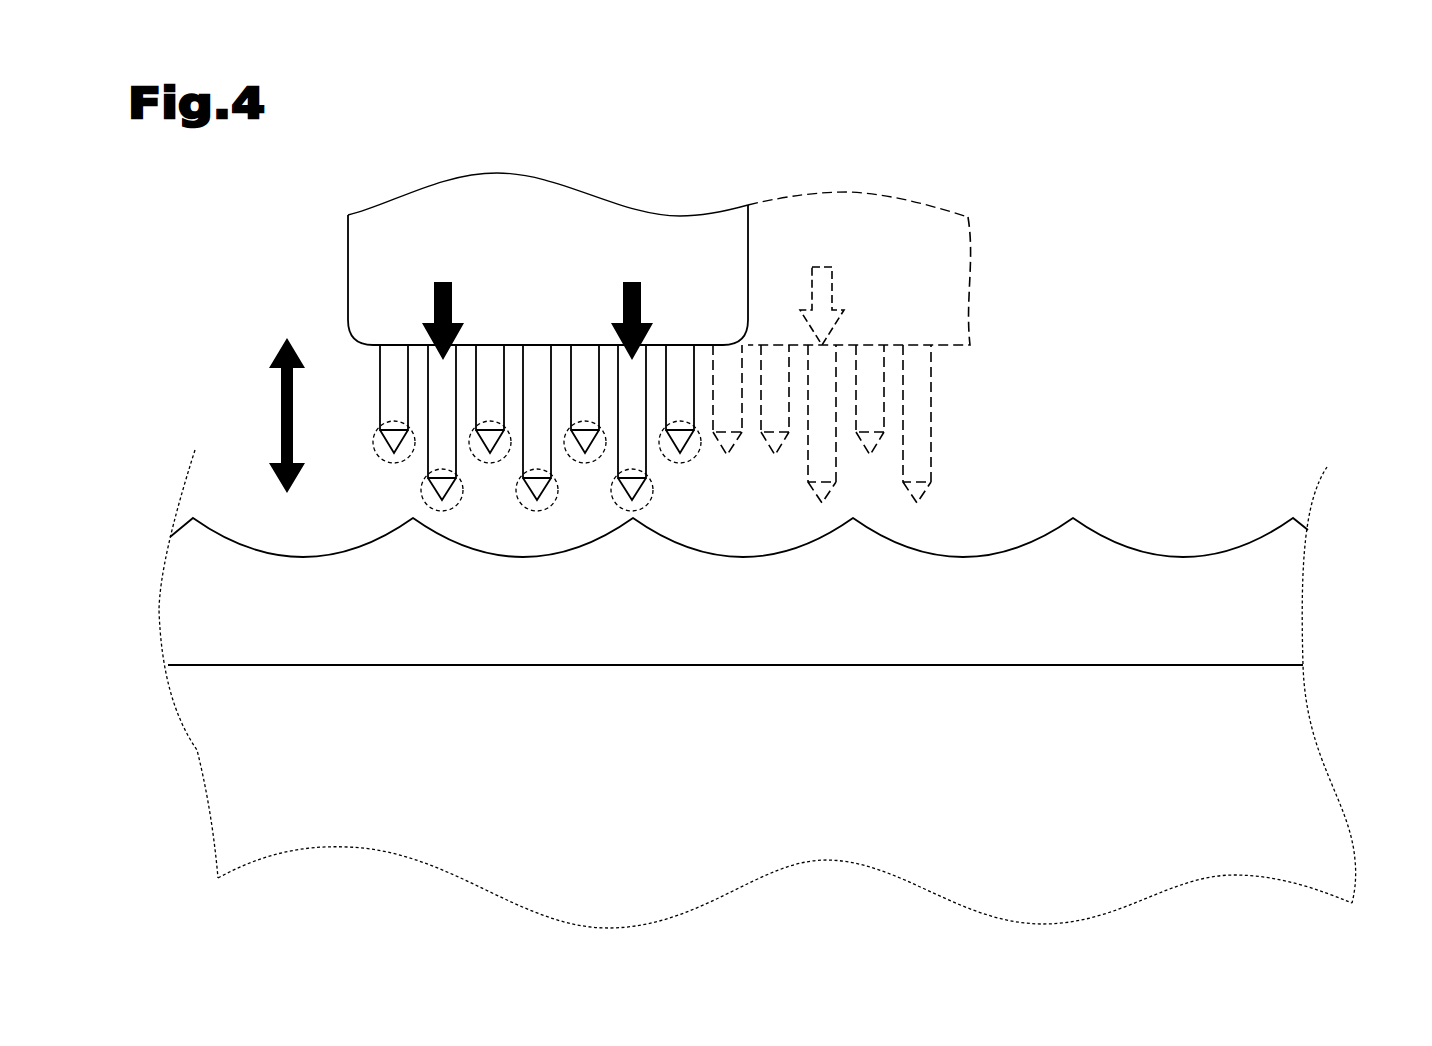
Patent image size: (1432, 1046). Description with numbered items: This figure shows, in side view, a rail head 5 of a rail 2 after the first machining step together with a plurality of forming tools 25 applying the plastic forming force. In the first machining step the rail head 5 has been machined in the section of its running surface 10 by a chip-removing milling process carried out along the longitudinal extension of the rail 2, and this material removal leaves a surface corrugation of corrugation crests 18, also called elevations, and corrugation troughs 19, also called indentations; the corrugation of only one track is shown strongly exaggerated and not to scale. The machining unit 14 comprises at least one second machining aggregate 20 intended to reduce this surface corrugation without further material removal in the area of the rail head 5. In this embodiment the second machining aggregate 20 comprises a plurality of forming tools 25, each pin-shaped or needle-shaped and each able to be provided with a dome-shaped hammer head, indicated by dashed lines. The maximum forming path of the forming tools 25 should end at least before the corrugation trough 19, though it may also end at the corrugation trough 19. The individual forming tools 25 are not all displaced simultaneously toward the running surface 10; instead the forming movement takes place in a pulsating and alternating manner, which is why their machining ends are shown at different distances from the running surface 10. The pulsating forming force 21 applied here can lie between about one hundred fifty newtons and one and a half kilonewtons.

The rail 2 is at (1302, 393).
The rail head 5 is at (1345, 580).
The running surface 10 is at (1167, 556).
The machining unit 14 is at (410, 155).
The corrugation crests 18 is at (430, 512).
The corrugation troughs 19 is at (933, 566).
The second machining aggregate 20 is at (742, 157).
The pulsating forming force 21 is at (632, 282).
The forming tools 25 is at (365, 365).